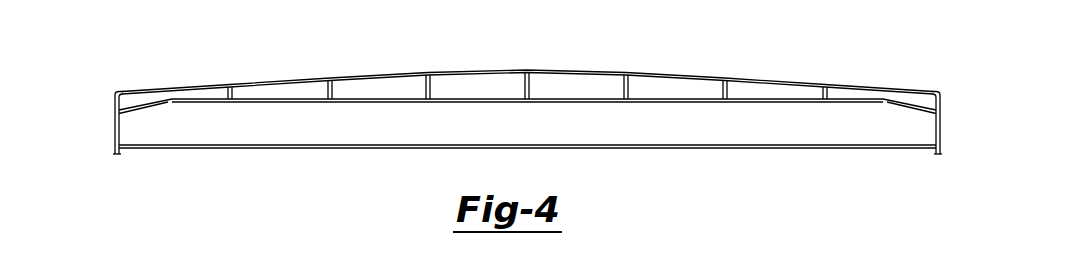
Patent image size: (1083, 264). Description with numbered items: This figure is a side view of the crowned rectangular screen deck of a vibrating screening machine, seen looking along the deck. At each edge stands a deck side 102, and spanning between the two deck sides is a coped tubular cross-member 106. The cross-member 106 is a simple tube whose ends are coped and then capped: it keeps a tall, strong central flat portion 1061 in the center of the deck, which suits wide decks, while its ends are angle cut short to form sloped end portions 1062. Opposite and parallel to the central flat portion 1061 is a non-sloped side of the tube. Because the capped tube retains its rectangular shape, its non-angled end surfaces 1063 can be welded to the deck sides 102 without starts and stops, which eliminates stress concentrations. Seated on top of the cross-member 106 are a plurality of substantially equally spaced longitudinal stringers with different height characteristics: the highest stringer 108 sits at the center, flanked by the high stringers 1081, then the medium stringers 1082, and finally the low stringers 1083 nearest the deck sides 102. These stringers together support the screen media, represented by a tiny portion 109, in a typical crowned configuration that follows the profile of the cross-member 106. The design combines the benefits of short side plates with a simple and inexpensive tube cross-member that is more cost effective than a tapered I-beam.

The deck sides 102 is at (113, 126).
The coped tubular cross-member 106 is at (527, 118).
The central flat portion 1061 is at (630, 103).
The sloped end portions 1062 is at (914, 102).
The non-angled end surfaces 1063 is at (120, 130).
The longitudinal stringer 108 is at (487, 65).
The longitudinal stringer 1081 is at (426, 88).
The longitudinal stringer 1082 is at (328, 86).
The longitudinal stringer 1083 is at (228, 90).
The screen media 109 is at (153, 91).